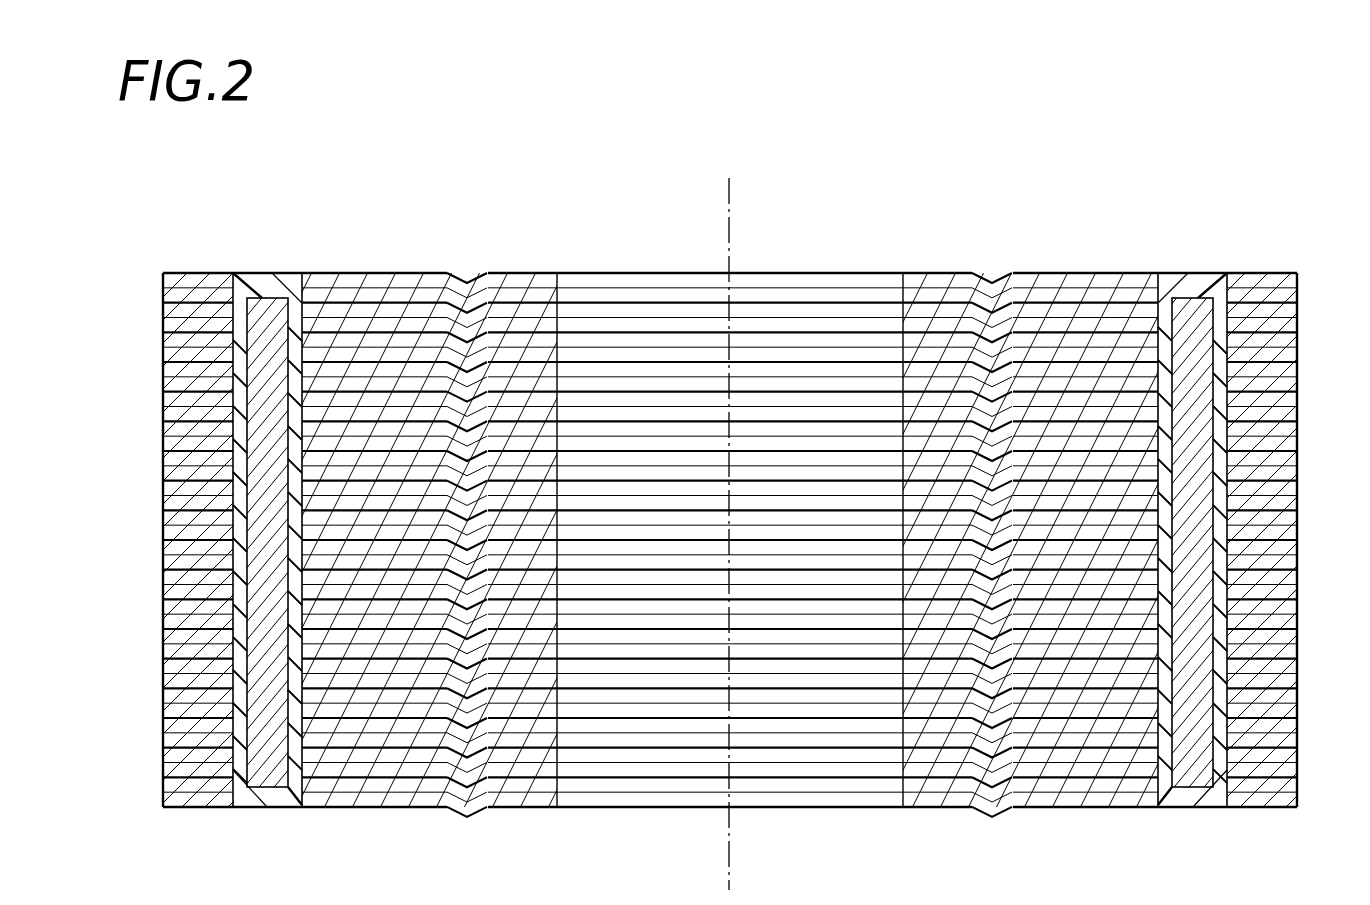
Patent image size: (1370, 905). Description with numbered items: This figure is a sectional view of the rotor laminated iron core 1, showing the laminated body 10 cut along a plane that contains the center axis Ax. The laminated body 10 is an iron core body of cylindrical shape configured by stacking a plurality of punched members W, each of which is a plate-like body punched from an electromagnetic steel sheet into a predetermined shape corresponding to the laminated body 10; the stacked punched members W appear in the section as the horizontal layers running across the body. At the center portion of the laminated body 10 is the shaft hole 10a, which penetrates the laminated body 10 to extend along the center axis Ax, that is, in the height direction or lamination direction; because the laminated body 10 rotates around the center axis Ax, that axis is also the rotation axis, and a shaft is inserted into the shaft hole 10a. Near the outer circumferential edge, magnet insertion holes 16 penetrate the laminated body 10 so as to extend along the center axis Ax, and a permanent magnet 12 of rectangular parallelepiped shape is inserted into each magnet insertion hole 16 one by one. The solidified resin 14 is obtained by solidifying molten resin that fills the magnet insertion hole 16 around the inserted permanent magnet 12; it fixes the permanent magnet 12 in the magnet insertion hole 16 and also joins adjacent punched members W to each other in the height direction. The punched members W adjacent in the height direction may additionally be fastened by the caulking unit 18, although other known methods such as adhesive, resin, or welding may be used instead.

The rotor laminated iron core 1 is at (1192, 170).
The laminated body 10 is at (158, 232).
The shaft hole 10a is at (860, 258).
The permanent magnet 12 is at (258, 318).
The solidified resin 14 is at (243, 797).
The magnet insertion hole 16 is at (290, 273).
The caulking unit 18 is at (465, 262).
The center axis Ax is at (732, 192).
The punched member W is at (165, 797).